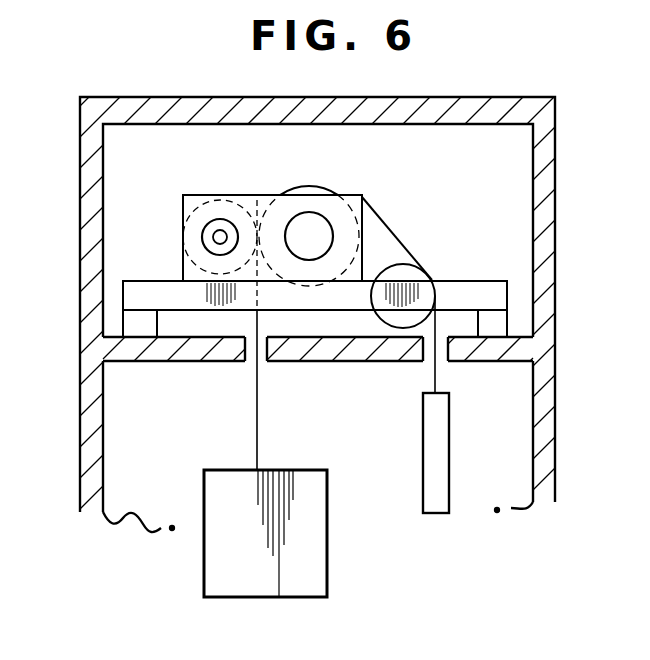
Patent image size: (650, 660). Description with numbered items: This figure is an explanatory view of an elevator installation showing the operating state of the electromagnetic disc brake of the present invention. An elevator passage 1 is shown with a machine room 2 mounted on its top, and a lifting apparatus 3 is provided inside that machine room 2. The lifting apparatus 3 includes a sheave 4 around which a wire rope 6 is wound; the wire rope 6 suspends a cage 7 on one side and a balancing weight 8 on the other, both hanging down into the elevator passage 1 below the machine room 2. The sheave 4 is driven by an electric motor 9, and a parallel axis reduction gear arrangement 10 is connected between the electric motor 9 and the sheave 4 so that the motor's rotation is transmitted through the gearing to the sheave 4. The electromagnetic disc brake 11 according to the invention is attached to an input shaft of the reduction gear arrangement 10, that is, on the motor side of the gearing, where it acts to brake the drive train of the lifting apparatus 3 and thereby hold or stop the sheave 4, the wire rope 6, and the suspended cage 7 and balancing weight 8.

The elevator passage 1 is at (133, 412).
The machine room 2 is at (122, 176).
The lifting apparatus 3 is at (283, 231).
The sheave 4 is at (324, 187).
The wire rope 6 is at (258, 418).
The cage 7 is at (204, 503).
The balancing weight 8 is at (423, 476).
The electric motor 9 is at (197, 270).
The parallel axis reduction gear arrangement 10 is at (212, 195).
The electromagnetic disc brake 11 is at (208, 226).